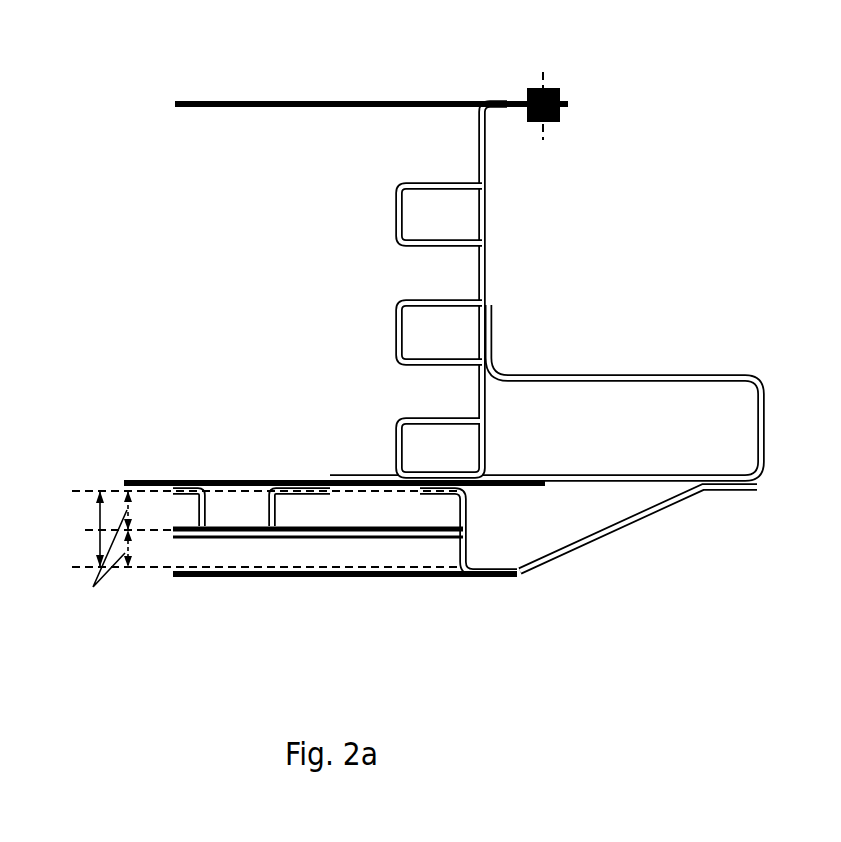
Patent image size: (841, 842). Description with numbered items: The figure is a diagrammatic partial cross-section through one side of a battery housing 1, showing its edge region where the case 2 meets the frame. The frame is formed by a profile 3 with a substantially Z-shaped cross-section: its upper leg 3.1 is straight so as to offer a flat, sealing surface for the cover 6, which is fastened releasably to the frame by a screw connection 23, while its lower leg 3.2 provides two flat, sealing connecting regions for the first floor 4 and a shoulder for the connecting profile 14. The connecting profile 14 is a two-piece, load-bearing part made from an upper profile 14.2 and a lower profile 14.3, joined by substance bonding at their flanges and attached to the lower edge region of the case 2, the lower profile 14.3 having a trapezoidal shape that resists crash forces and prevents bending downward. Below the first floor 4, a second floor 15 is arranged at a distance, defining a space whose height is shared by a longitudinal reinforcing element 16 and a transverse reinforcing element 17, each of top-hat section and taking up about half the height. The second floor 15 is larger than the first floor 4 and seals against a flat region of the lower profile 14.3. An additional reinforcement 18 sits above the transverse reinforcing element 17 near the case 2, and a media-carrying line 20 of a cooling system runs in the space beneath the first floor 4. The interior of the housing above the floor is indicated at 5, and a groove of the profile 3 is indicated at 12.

The battery housing 1 is at (452, 366).
The case 2 is at (522, 293).
The profile 3 is at (484, 208).
The upper leg 3.1 is at (514, 112).
The lower leg 3.2 is at (405, 483).
The first floor 4 is at (126, 487).
The interior space 5 is at (262, 320).
The cover 6 is at (305, 103).
The groove 12 is at (440, 300).
The connecting profile 14 is at (660, 355).
The upper profile 14.2 is at (768, 460).
The lower profile 14.3 is at (637, 520).
The second floor 15 is at (467, 575).
The longitudinal reinforcing element 16 is at (266, 511).
The transverse reinforcing element 17 is at (335, 551).
The additional reinforcement 18 is at (360, 510).
The media-carrying line 20 is at (148, 493).
The screw connection 23 is at (557, 85).